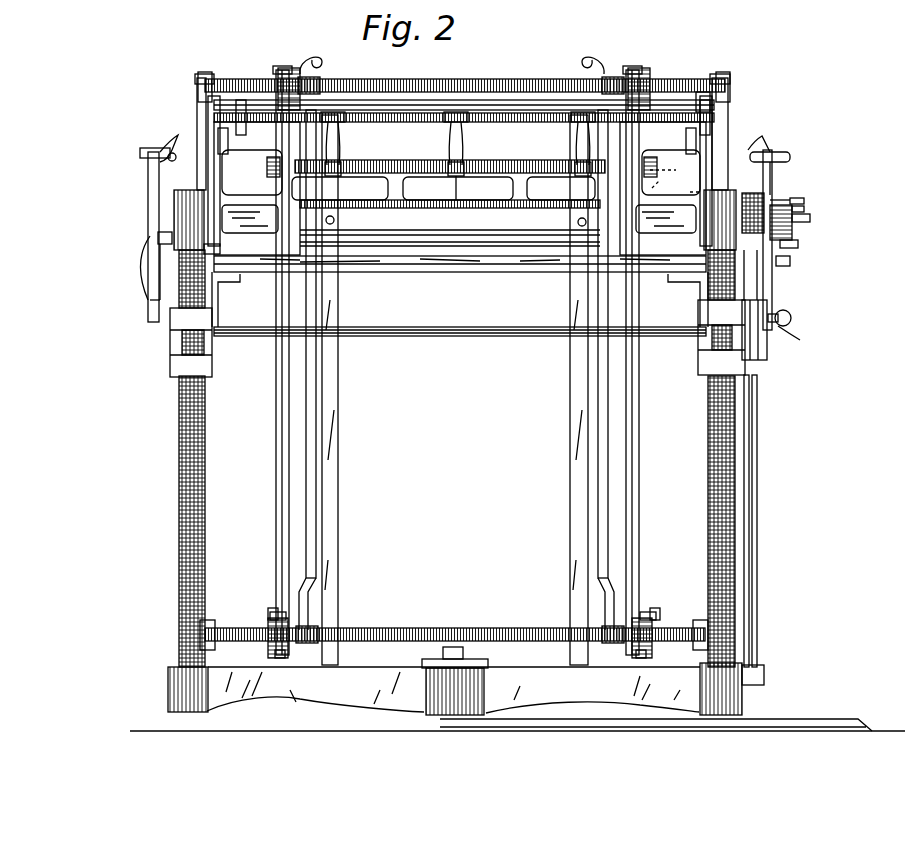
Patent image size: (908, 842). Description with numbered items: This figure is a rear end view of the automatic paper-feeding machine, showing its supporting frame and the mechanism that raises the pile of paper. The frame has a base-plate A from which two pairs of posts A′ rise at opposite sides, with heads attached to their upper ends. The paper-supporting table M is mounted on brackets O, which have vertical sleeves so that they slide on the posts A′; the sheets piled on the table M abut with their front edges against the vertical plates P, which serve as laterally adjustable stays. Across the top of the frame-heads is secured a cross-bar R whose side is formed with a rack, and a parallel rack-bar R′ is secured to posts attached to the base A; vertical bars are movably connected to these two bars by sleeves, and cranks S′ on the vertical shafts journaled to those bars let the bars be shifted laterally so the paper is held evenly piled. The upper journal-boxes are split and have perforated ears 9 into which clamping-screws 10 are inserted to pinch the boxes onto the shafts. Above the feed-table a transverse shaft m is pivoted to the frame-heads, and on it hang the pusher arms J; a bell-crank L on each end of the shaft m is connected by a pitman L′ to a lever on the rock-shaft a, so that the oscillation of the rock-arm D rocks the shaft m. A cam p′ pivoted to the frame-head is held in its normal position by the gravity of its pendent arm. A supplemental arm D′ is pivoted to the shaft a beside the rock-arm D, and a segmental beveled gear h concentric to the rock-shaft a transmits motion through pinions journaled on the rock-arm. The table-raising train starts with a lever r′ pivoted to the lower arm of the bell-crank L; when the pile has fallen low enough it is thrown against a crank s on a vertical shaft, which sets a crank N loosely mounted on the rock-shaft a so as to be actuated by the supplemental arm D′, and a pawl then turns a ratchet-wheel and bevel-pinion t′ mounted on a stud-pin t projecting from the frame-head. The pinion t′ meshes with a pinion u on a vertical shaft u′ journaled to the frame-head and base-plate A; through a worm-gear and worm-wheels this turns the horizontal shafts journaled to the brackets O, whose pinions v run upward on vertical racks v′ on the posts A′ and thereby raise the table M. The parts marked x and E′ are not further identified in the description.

The base-plate A is at (333, 702).
The posts A′ is at (178, 490).
The cross-bar R is at (533, 84).
The rack-bar R′ is at (516, 628).
The cranks S′ is at (262, 518).
The stays P is at (340, 424).
The cam p′ is at (712, 100).
The paper-supporting table M is at (450, 266).
The brackets O is at (248, 298).
The arms J is at (342, 150).
The transverse shaft m is at (518, 122).
The bell-crank L is at (228, 138).
The pitman L′ is at (224, 190).
The clamping-screws 10 is at (644, 614).
The perforated ears 9 is at (268, 612).
The lever E′ is at (799, 337).
The rock-arm D is at (148, 214).
The supplemental arm D′ is at (774, 286).
The segmental beveled gear h is at (162, 286).
The collar x is at (215, 247).
The rock-shaft a is at (336, 221).
The pinion u is at (753, 213).
The vertical shaft u′ is at (178, 440).
The pinions v is at (172, 350).
The racks v′ is at (706, 356).
The stud-pin t is at (810, 218).
The bevel-pinion t′ is at (804, 200).
The crank N is at (790, 262).
The lever r′ is at (653, 193).
The crank s is at (688, 197).